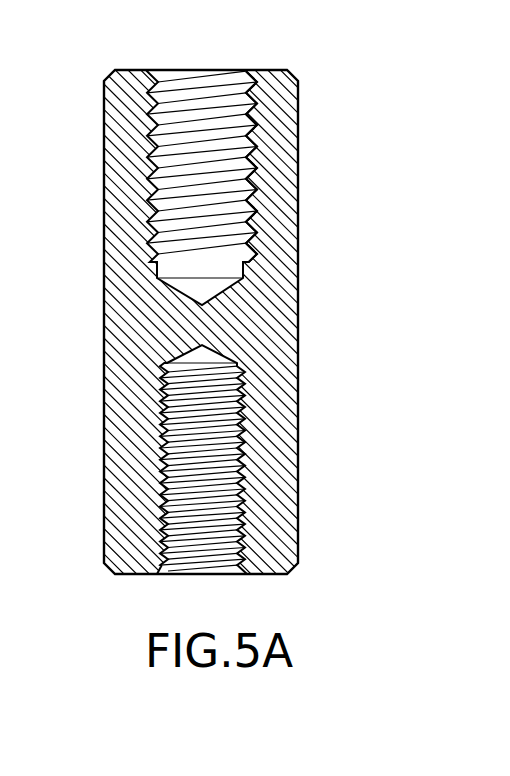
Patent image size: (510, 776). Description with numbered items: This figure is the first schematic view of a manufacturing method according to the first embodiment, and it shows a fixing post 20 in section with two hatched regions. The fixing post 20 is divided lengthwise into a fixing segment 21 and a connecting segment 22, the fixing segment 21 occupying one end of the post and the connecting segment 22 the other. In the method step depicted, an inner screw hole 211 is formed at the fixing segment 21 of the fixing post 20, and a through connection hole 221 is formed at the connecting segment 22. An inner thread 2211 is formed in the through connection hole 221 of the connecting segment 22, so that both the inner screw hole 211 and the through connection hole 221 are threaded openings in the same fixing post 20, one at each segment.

The fixing post 20 is at (305, 300).
The fixing segment 21 is at (218, 459).
The connecting segment 22 is at (230, 184).
The inner screw hole 211 is at (240, 493).
The through connection hole 221 is at (200, 92).
The inner thread 2211 is at (262, 115).